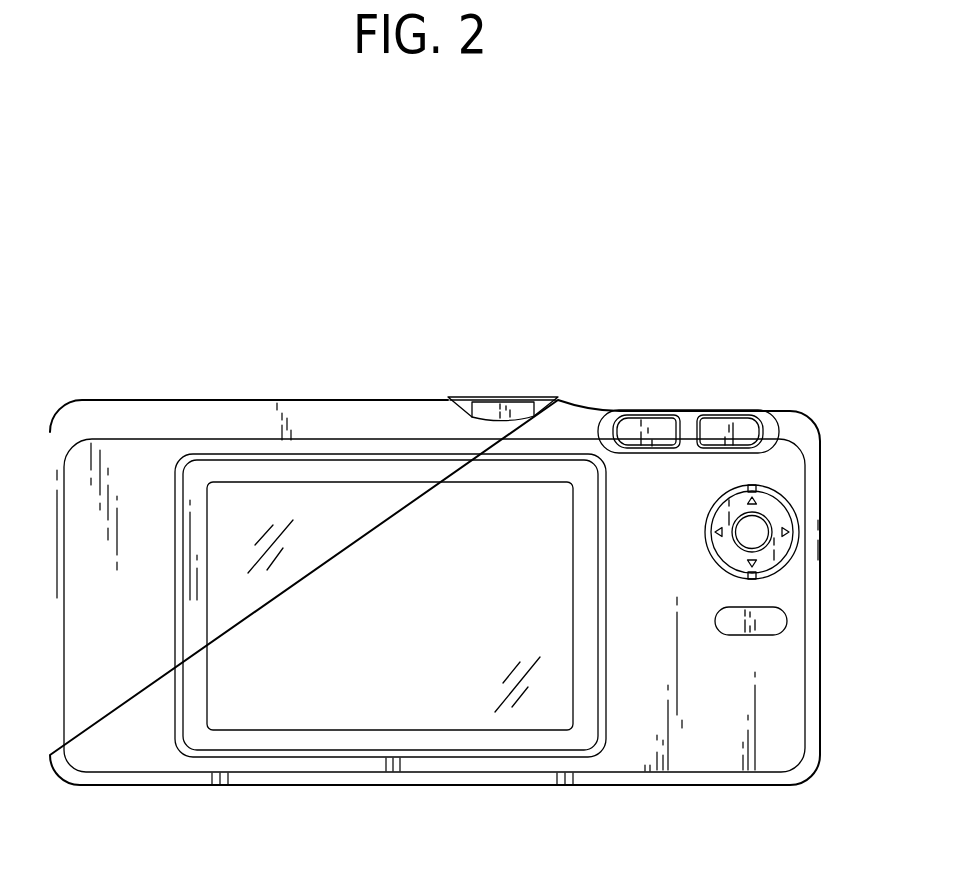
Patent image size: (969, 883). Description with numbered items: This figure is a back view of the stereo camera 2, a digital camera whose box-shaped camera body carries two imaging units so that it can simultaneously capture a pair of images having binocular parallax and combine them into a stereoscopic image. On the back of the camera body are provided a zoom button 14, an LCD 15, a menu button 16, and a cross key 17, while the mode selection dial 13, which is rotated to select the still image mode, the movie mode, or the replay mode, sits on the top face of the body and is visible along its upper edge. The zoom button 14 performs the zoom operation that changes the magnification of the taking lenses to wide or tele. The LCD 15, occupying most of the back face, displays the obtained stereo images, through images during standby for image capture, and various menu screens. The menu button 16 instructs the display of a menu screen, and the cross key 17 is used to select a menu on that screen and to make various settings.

The stereo camera 2 is at (410, 284).
The mode selection dial 13 is at (507, 405).
The zoom button 14 is at (688, 425).
The LCD 15 is at (415, 695).
The menu button 16 is at (787, 620).
The cross key 17 is at (770, 508).